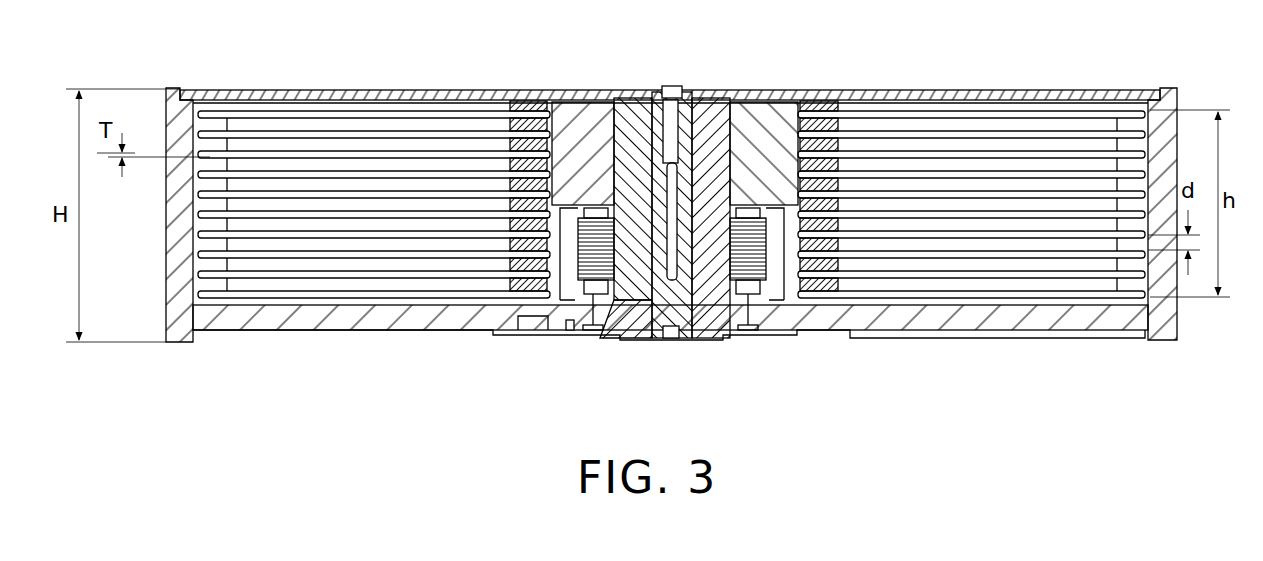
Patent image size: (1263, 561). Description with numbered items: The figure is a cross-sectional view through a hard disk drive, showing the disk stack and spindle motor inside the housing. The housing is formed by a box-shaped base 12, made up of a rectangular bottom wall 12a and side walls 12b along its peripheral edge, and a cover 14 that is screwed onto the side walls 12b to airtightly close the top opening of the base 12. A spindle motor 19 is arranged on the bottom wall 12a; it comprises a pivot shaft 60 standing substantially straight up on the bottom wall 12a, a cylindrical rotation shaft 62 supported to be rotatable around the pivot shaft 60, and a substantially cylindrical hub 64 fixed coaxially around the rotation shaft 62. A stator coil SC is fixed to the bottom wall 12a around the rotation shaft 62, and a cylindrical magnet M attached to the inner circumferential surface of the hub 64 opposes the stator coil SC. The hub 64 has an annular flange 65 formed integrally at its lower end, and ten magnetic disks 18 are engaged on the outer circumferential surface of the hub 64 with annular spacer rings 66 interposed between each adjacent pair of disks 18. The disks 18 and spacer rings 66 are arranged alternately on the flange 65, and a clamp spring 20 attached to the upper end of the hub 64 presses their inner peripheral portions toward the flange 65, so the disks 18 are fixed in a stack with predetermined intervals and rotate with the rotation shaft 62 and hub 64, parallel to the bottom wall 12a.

The base 12 is at (681, 233).
The bottom wall 12a is at (413, 322).
The side walls 12b is at (180, 266).
The cover 14 is at (372, 92).
The magnetic disks 18 is at (1057, 192).
The spindle motor 19 is at (624, 315).
The clamp spring 20 is at (548, 104).
The pivot shaft 60 is at (685, 340).
The rotation shaft 62 is at (718, 145).
The hub 64 is at (770, 135).
The annular flange 65 is at (535, 332).
The spacer rings 66 is at (846, 205).
The magnet M is at (770, 300).
The stator coil SC is at (570, 332).